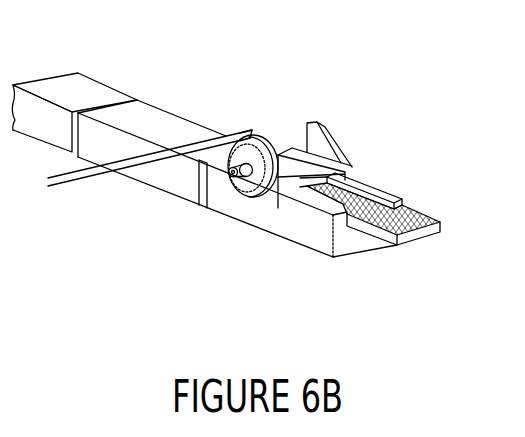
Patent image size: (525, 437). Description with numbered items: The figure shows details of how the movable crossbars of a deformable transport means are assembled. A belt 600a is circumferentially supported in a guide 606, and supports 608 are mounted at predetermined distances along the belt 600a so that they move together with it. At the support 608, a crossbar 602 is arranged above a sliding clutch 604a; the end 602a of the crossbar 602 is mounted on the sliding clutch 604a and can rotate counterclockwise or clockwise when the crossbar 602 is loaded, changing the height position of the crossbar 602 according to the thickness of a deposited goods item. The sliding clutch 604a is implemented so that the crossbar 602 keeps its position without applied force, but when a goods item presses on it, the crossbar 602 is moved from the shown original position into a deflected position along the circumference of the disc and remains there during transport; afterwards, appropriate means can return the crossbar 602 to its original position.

The belt 600a is at (420, 214).
The crossbar 602 is at (65, 183).
The end of the crossbar 602a is at (221, 150).
The sliding clutch 604a is at (252, 130).
The guide 606 is at (313, 252).
The support 608 is at (336, 148).